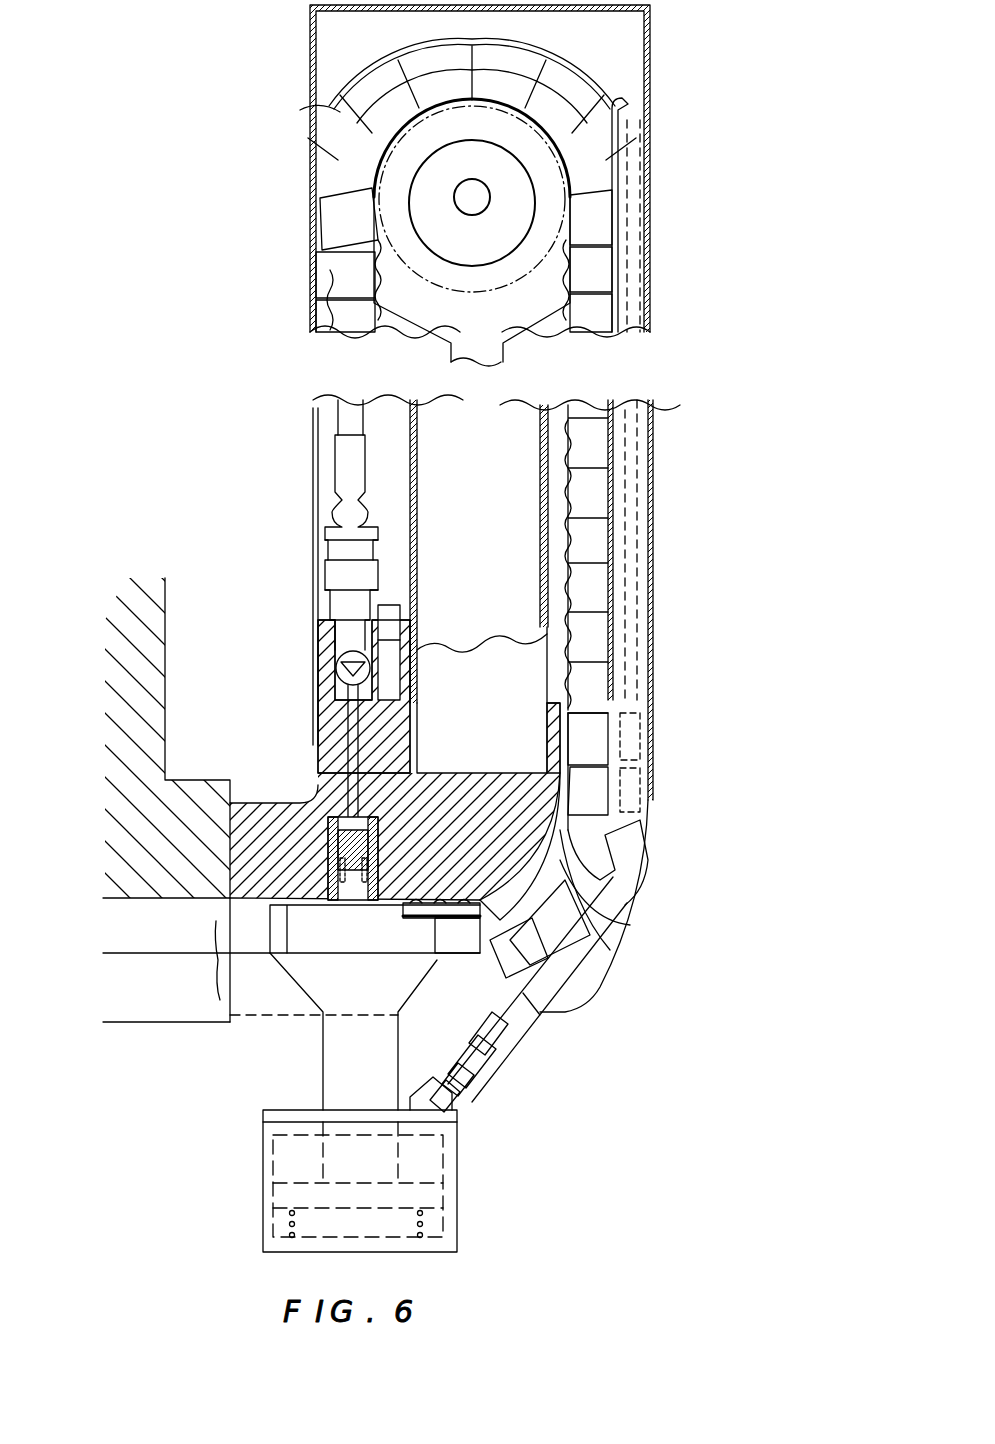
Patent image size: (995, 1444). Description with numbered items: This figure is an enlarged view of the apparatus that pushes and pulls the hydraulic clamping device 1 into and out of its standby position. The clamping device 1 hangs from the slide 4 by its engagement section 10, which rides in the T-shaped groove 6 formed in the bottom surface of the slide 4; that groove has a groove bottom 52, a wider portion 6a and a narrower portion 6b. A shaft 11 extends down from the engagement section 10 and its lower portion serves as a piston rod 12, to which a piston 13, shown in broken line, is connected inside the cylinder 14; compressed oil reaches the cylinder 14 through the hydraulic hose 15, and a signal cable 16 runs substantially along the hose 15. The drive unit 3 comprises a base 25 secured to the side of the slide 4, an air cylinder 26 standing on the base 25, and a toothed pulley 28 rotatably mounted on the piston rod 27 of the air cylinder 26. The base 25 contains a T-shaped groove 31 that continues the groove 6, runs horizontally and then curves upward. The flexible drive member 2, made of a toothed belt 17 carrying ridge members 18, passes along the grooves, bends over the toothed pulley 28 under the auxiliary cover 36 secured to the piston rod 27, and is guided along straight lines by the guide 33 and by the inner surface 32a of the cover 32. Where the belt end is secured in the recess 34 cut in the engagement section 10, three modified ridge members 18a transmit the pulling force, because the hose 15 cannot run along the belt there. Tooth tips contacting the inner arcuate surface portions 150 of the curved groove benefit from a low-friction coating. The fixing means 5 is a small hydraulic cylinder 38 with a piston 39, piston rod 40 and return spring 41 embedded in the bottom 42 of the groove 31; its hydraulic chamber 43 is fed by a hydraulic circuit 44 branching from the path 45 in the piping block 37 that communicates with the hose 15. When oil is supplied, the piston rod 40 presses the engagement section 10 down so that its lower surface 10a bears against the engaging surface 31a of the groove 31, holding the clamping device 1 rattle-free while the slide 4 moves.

The hydraulic clamping device 1 is at (477, 1193).
The flexible drive member 2 is at (604, 500).
The drive unit 3 is at (534, 681).
The slide 4 is at (76, 793).
The fixing means 5 is at (390, 958).
The T-shaped groove 6 is at (42, 935).
The wider portion 6a is at (132, 944).
The narrower portion 6b is at (132, 996).
The engagement section 10 is at (270, 835).
The lower surface 10a is at (292, 985).
The shaft 11 is at (335, 1102).
The piston rod 12 is at (322, 1160).
The piston 13 is at (290, 1200).
The cylinder 14 is at (450, 1232).
The hydraulic hose 15 is at (356, 448).
The signal cable 16 is at (608, 940).
The toothed belt 17 is at (555, 605).
The ridge members 18 is at (645, 752).
The ridge members 18a is at (642, 843).
The base 25 is at (236, 800).
The air cylinder 26 is at (550, 565).
The piston rod 27 is at (500, 352).
The toothed pulley 28 is at (605, 262).
The T-shaped groove 31 is at (215, 970).
The engaging surface 31a is at (258, 950).
The cover 32 is at (652, 95).
The inner surface 32a is at (315, 215).
The guide 33 is at (632, 215).
The recess 34 is at (425, 922).
The auxiliary cover 36 is at (360, 72).
The piping block 37 is at (320, 632).
The hydraulic cylinder 38 is at (385, 815).
The piston 39 is at (380, 836).
The piston rod 40 is at (388, 890).
The return spring 41 is at (380, 862).
The bottom 42 is at (228, 908).
The hydraulic chamber 43 is at (336, 800).
The hydraulic circuit 44 is at (345, 712).
The path 45 is at (334, 666).
The groove bottom 52 is at (120, 897).
The inner arcuate surface portions 150 is at (512, 870).